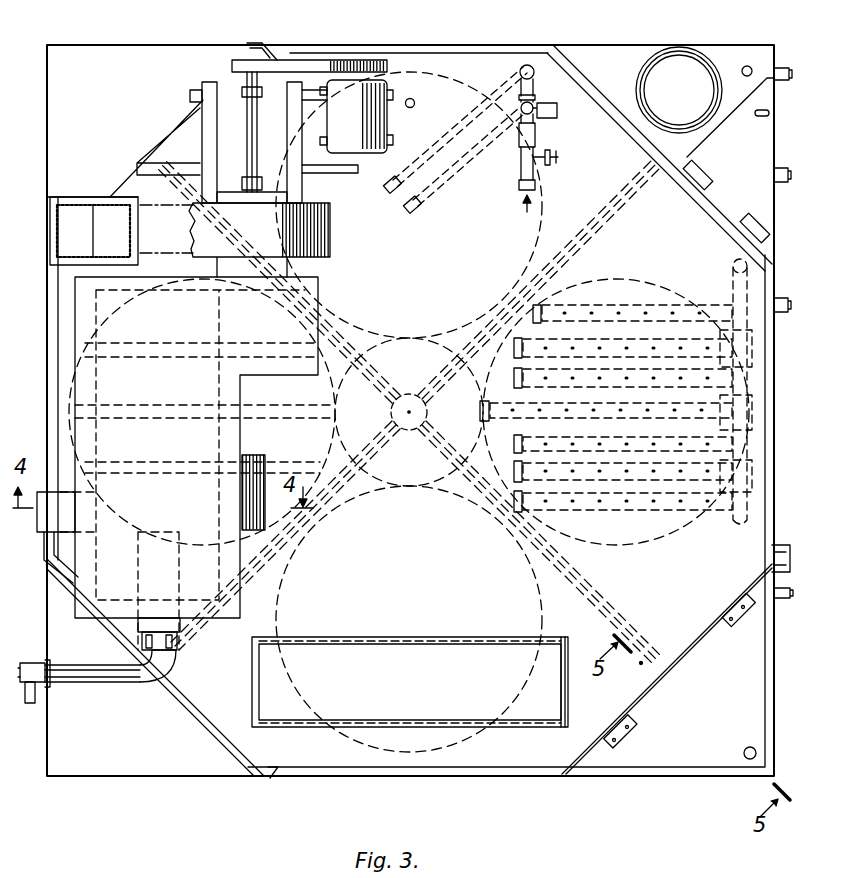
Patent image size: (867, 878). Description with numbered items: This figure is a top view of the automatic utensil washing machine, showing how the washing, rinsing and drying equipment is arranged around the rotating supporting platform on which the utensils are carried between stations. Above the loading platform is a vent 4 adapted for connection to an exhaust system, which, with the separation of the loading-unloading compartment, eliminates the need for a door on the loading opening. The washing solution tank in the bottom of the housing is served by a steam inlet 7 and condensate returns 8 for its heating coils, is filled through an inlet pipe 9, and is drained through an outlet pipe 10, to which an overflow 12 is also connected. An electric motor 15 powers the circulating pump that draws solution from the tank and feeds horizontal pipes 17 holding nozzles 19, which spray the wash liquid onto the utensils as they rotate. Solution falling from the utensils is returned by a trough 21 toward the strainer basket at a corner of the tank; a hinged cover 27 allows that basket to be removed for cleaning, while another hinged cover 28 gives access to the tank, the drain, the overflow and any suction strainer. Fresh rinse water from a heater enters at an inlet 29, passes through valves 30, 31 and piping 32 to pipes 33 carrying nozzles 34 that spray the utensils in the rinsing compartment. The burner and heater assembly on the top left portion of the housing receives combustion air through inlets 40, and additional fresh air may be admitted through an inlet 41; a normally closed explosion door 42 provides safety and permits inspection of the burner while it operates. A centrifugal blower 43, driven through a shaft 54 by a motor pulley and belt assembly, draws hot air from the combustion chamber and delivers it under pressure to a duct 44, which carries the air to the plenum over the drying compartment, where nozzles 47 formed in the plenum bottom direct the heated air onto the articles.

The vent 4 is at (407, 702).
The steam inlet 7 is at (783, 545).
The condensate returns 8 is at (782, 599).
The inlet pipe 9 is at (748, 64).
The outlet pipe 10 is at (779, 184).
The overflow 12 is at (778, 314).
The electric motor 15 is at (677, 58).
The horizontal pipes 17 is at (637, 312).
The nozzles 19 is at (563, 312).
The trough 21 is at (682, 606).
The hinged cover 27 is at (675, 750).
The hinged cover 28 is at (758, 138).
The inlet 29 is at (534, 184).
The valve 30 is at (537, 153).
The valve 31 is at (537, 104).
The piping 32 is at (531, 82).
The pipes 33 is at (450, 113).
The nozzles 34 is at (417, 210).
The inlets 40 is at (26, 664).
The inlet 41 is at (37, 527).
The explosion door 42 is at (265, 500).
The centrifugal blower 43 is at (330, 236).
The duct 44 is at (72, 221).
The nozzles 47 is at (160, 470).
The shaft 54 is at (250, 112).